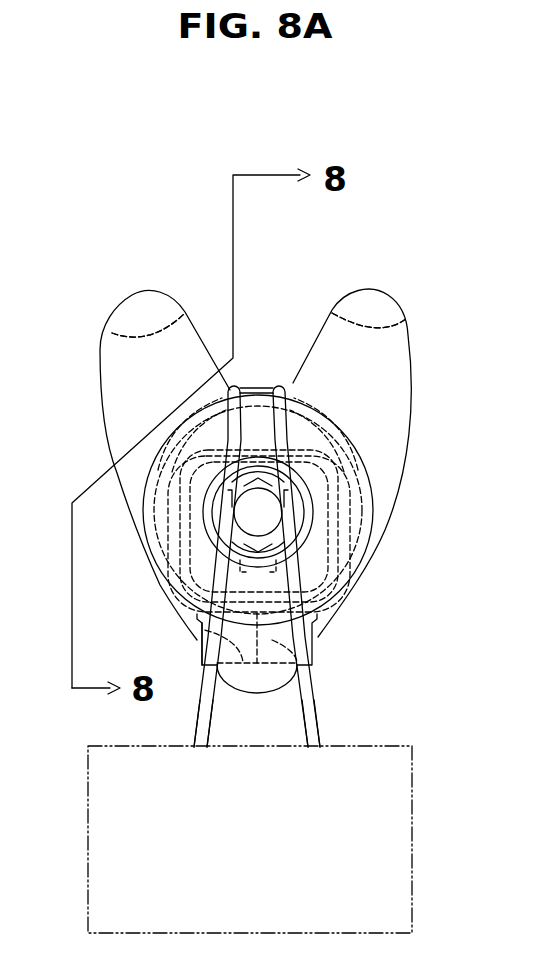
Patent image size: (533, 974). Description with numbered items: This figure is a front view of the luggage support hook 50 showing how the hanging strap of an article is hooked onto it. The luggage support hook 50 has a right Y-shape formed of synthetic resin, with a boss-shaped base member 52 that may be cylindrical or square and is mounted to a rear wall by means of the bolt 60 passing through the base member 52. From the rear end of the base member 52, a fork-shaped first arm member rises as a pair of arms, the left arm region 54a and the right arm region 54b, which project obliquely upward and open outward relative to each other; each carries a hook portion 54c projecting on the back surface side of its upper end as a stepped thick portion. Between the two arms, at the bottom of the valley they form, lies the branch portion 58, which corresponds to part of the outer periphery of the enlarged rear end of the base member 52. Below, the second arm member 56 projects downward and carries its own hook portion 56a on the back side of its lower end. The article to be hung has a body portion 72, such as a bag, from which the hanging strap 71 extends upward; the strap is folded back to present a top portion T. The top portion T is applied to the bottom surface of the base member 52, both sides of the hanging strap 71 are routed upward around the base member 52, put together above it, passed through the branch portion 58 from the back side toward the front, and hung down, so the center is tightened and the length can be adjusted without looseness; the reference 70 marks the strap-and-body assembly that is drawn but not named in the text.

The luggage support hook 50 is at (391, 272).
The base member 52 is at (368, 562).
The left arm region 54a is at (110, 350).
The right arm region 54b is at (410, 358).
The hook portion 54c is at (156, 305).
The second arm member 56 is at (270, 640).
The hook portion 56a is at (206, 641).
The branch portion 58 is at (276, 385).
The bolt 60 is at (262, 515).
The holding system 70 is at (368, 714).
The hanging strap 71 is at (310, 707).
The body portion 72 is at (372, 870).
The top portion T is at (295, 676).